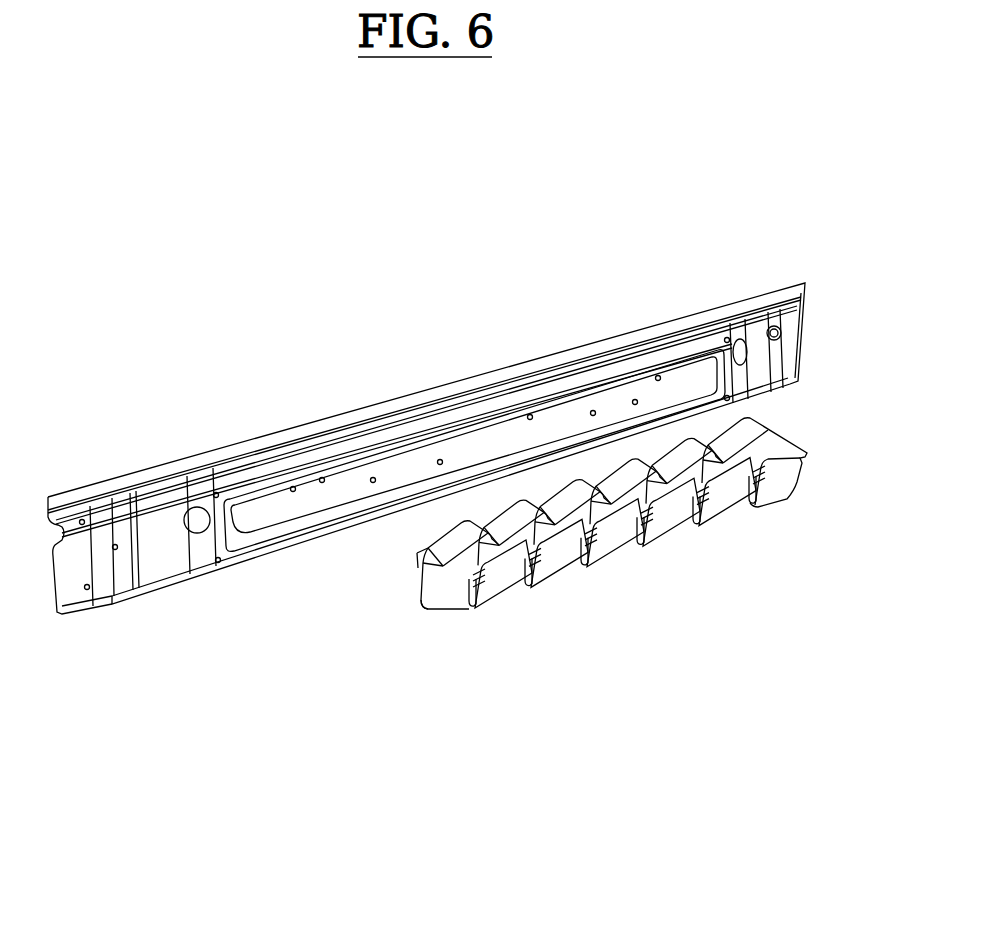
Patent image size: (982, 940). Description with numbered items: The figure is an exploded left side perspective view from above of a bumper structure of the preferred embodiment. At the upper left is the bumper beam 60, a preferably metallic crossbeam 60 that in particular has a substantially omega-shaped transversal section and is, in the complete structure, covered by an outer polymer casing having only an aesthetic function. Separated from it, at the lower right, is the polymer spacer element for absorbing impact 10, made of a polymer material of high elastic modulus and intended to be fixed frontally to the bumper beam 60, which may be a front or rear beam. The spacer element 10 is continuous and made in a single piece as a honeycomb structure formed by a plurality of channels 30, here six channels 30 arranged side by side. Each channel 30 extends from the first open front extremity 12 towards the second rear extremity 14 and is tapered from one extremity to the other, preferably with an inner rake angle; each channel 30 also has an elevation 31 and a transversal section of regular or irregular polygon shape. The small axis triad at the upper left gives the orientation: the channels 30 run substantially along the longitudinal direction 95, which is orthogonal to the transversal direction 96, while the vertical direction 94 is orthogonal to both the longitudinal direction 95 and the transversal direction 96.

The polymer spacer element for absorbing impact 10 is at (611, 609).
The first open front extremity 12 is at (442, 597).
The second rear extremity 14 is at (418, 585).
The channels 30 is at (480, 595).
The elevation 31 is at (427, 593).
The bumper beam 60 is at (188, 605).
The vertical direction 94 is at (103, 181).
The longitudinal direction 95 is at (103, 181).
The transversal direction 96 is at (103, 181).